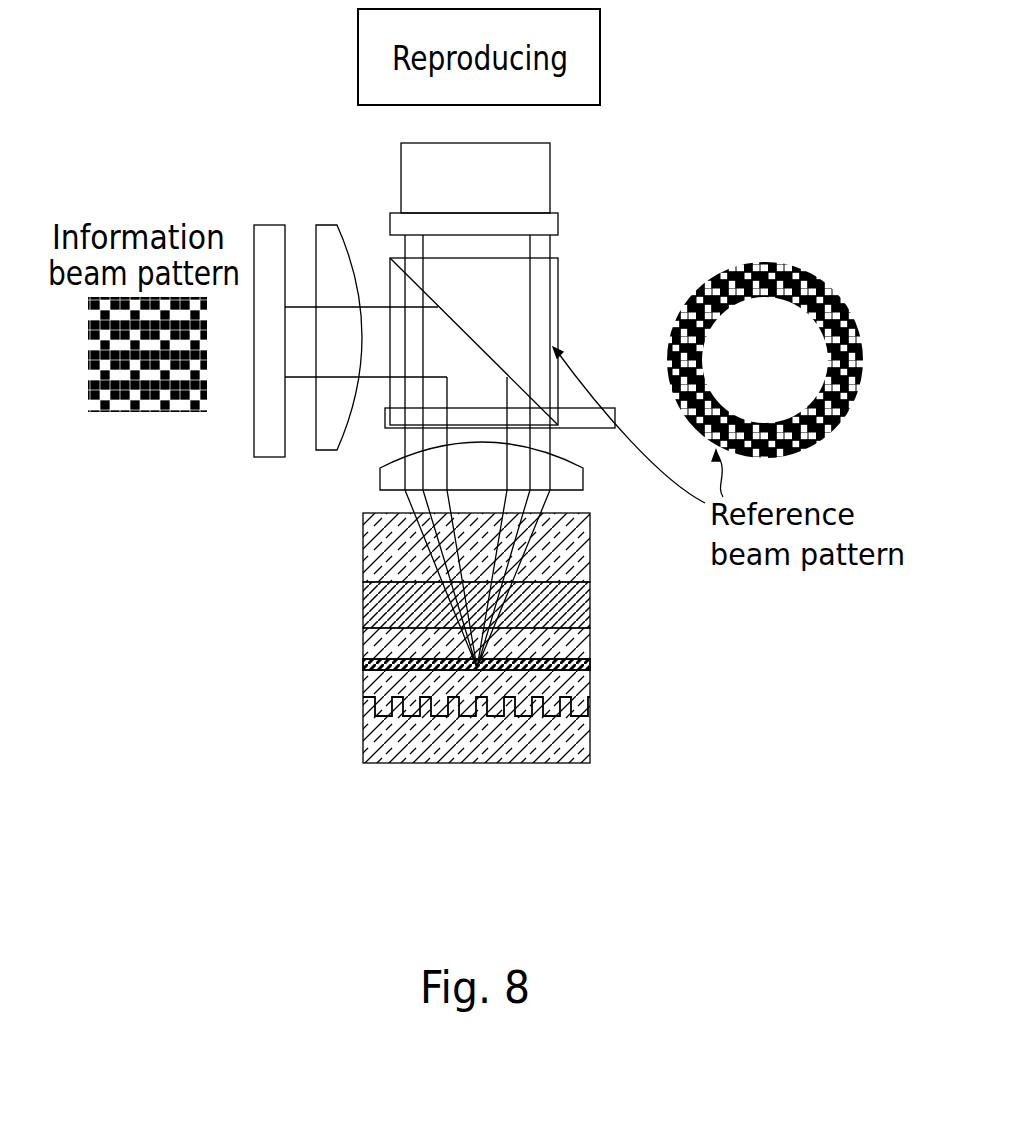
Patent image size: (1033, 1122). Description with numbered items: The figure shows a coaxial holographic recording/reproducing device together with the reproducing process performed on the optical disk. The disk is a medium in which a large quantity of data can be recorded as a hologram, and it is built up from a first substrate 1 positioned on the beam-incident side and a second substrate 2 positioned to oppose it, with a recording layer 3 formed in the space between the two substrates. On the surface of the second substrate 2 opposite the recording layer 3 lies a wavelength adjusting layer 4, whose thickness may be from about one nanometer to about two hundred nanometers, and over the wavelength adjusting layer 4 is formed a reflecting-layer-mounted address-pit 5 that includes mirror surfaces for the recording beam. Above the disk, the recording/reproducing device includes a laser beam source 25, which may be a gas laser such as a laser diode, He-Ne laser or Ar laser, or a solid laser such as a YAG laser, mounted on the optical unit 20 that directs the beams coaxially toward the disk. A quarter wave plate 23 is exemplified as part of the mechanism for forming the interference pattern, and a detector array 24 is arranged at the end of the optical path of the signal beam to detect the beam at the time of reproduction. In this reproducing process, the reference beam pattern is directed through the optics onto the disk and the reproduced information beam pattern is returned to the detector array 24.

The first substrate 1 is at (590, 565).
The second substrate 2 is at (590, 640).
The recording layer 3 is at (590, 603).
The wavelength adjusting layer 4 is at (590, 665).
The reflecting-layer-mounted address-pit 5 is at (590, 697).
The optical pickup / detector unit 20 is at (540, 228).
The ¼ wave plate 23 is at (383, 433).
The detector array 24 is at (254, 448).
The laser beam source 25 is at (415, 180).